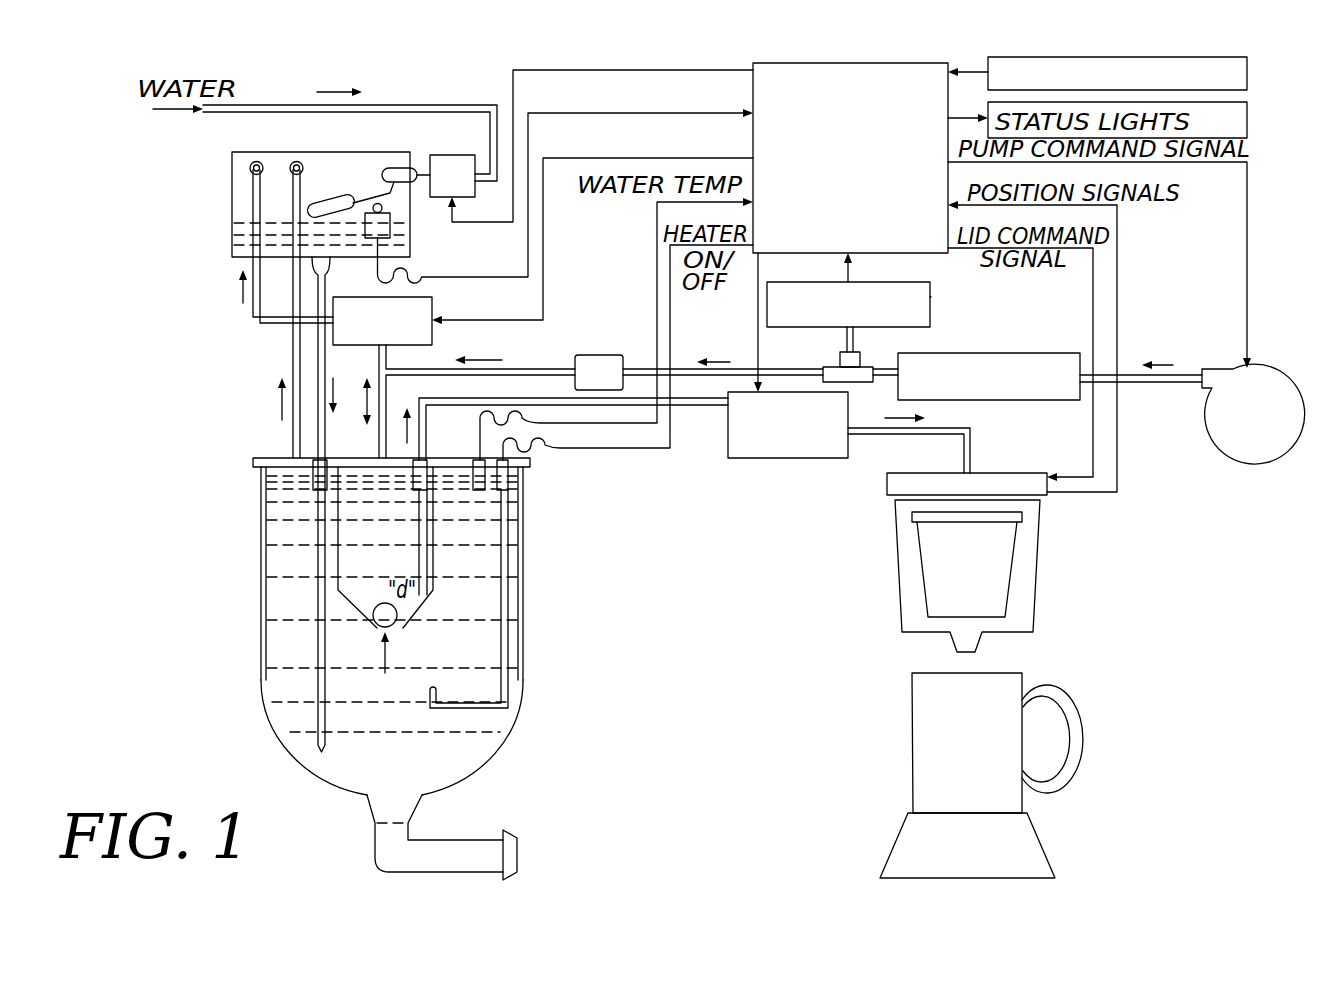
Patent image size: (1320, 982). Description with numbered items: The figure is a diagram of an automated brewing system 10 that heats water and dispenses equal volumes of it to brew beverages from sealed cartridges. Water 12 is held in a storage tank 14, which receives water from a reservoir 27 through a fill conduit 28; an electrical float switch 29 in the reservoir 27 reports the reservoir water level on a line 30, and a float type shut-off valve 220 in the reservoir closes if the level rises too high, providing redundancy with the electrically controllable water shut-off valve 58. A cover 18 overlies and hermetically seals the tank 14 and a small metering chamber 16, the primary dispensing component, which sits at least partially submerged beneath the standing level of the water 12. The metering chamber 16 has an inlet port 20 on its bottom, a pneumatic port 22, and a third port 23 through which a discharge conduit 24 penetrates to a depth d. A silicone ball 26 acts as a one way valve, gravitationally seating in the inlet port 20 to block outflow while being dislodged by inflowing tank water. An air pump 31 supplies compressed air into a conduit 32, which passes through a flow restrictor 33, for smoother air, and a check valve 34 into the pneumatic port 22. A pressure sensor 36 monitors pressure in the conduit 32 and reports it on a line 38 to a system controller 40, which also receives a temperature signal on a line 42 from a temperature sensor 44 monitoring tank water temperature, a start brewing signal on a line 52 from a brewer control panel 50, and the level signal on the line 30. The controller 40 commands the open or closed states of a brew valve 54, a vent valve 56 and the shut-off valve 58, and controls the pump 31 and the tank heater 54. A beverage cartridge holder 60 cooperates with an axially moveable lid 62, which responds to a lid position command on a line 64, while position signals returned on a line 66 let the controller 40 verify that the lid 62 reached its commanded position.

The brewing system 10 is at (412, 68).
The water 12 is at (451, 748).
The storage tank 14 is at (525, 685).
The metering chamber 16 is at (415, 619).
The cover 18 is at (268, 458).
The inlet port 20 is at (390, 640).
The pneumatic port 22 is at (381, 466).
The third port 23 is at (422, 466).
The discharge conduit 24 is at (418, 562).
The silicone ball 26 is at (382, 607).
The reservoir 27 is at (245, 188).
The fill conduit 28 is at (327, 363).
The electrical float switch 29 is at (392, 228).
The line 30 is at (512, 268).
The air pump 31 is at (1263, 427).
The conduit 32 is at (1177, 388).
The flow restrictor 33 is at (995, 353).
The check valve 34 is at (605, 355).
The pressure sensor 36 is at (930, 297).
The line 38 is at (850, 263).
The system controller 40 is at (858, 200).
The line 42 is at (657, 272).
The temperature sensor 44 is at (508, 477).
The brewer control panel 50 is at (1247, 83).
The line 52 is at (970, 46).
The brew valve 54 is at (780, 462).
The vent valve 56 is at (432, 300).
The water shut-off valve 58 is at (466, 203).
The beverage cartridge holder 60 is at (1048, 568).
The lid 62 is at (997, 477).
The line 64 is at (1093, 298).
The line 66 is at (1117, 280).
The float type shut-off valve 220 is at (401, 168).